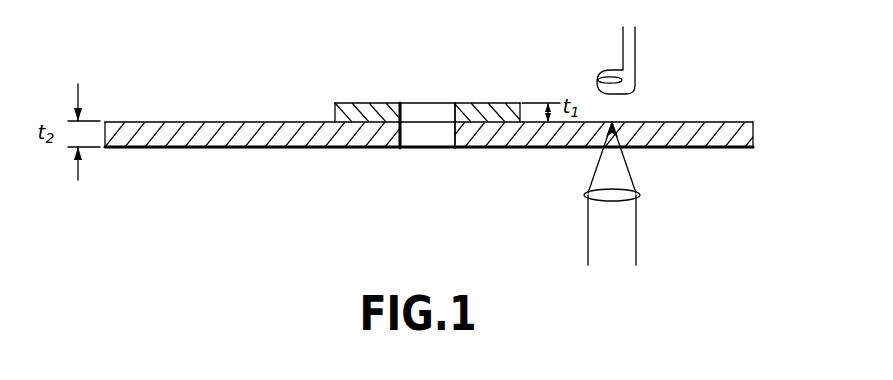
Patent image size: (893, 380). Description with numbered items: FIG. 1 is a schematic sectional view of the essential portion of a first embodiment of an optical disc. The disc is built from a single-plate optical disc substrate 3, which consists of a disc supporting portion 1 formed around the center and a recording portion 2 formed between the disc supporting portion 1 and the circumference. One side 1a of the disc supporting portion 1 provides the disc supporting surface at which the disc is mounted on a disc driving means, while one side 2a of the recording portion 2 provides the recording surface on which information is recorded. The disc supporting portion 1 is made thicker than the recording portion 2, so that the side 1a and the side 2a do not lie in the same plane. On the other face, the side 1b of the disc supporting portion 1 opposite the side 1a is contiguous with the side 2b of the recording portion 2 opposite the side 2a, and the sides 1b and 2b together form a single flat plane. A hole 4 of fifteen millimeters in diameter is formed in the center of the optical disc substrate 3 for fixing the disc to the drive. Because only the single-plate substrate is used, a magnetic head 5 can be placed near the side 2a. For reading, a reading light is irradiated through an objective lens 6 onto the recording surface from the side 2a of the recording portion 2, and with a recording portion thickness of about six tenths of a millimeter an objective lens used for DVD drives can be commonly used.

The disc supporting portion 1 is at (465, 150).
The side of the disc supporting portion 1a is at (470, 103).
The side of the disc supporting portion opposite to the disc supporting surface 1b is at (493, 150).
The recording portion 2 is at (700, 150).
The side of the recording portion 2a is at (672, 122).
The side of the recording portion opposite to the recording surface 2b is at (730, 150).
The optical disc substrate 3 is at (758, 128).
The hole 4 is at (400, 103).
The magnetic head 5 is at (609, 70).
The objective lens 6 is at (605, 198).